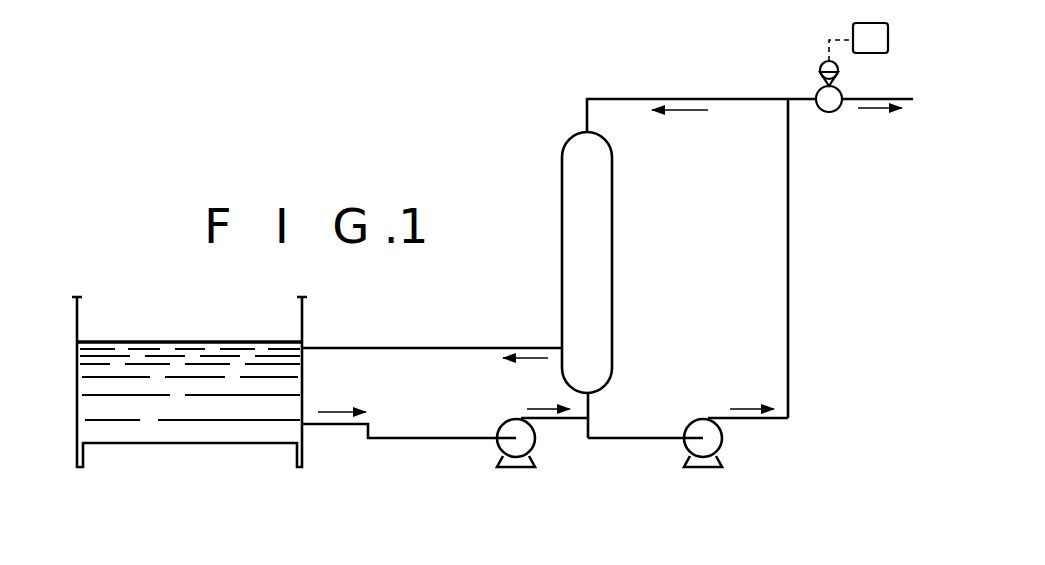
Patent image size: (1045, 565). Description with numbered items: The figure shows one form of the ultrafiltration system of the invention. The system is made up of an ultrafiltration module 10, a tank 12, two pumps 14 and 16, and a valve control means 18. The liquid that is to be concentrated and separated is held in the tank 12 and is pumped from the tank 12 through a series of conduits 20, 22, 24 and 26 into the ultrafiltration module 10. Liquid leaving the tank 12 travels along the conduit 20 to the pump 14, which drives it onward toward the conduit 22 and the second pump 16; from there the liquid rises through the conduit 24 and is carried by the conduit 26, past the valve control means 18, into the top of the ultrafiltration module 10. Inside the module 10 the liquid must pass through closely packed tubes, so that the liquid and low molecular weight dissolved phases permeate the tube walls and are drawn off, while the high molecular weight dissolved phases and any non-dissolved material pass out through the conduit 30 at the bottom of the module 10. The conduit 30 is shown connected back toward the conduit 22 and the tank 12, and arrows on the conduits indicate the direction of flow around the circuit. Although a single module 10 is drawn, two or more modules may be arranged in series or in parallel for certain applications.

The ultrafiltration module 10 is at (604, 293).
The tank 12 is at (77, 410).
The pump 14 is at (499, 466).
The pump 16 is at (707, 467).
The valve control means 18 is at (823, 63).
The conduit 20 is at (395, 438).
The conduit 22 is at (650, 441).
The conduit 24 is at (788, 373).
The conduit 26 is at (684, 99).
The conduit 30 is at (588, 411).